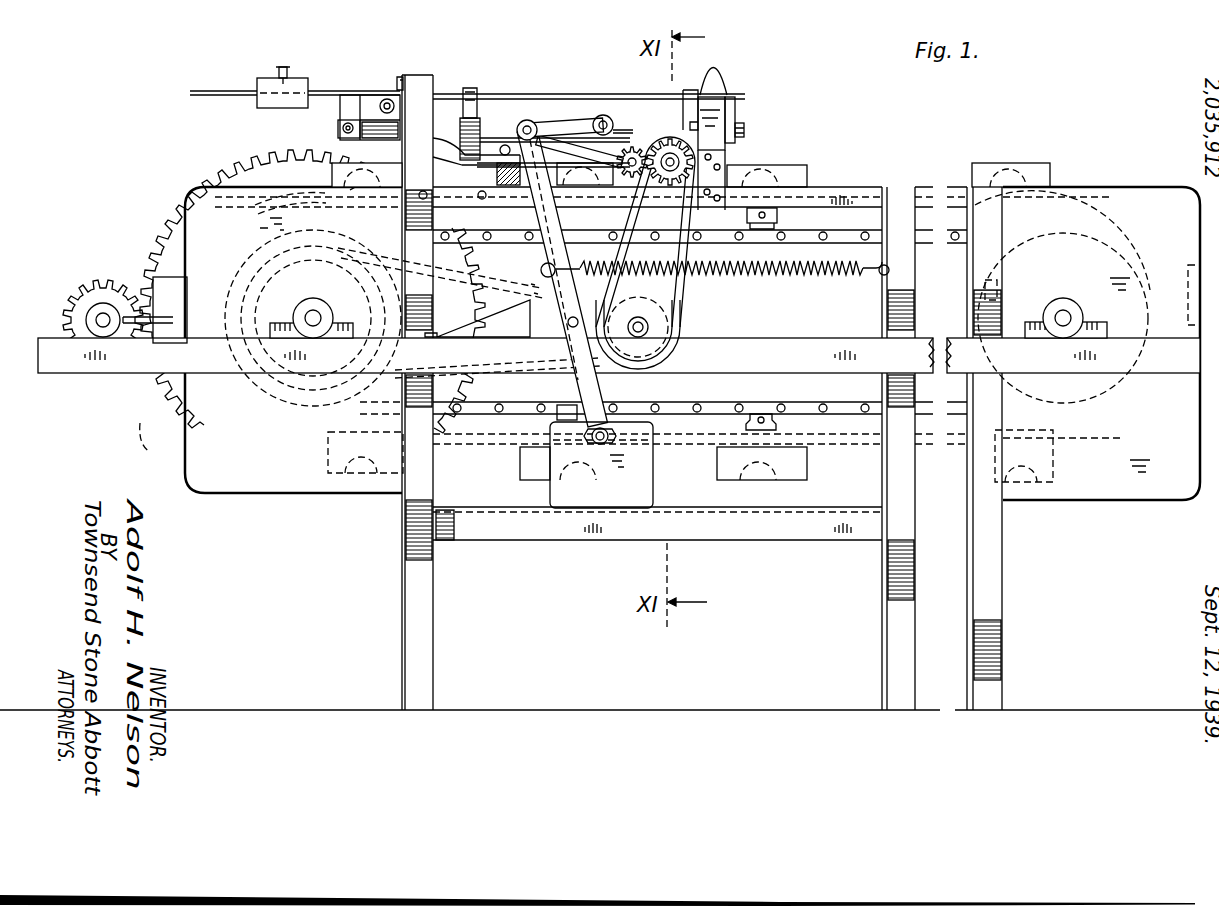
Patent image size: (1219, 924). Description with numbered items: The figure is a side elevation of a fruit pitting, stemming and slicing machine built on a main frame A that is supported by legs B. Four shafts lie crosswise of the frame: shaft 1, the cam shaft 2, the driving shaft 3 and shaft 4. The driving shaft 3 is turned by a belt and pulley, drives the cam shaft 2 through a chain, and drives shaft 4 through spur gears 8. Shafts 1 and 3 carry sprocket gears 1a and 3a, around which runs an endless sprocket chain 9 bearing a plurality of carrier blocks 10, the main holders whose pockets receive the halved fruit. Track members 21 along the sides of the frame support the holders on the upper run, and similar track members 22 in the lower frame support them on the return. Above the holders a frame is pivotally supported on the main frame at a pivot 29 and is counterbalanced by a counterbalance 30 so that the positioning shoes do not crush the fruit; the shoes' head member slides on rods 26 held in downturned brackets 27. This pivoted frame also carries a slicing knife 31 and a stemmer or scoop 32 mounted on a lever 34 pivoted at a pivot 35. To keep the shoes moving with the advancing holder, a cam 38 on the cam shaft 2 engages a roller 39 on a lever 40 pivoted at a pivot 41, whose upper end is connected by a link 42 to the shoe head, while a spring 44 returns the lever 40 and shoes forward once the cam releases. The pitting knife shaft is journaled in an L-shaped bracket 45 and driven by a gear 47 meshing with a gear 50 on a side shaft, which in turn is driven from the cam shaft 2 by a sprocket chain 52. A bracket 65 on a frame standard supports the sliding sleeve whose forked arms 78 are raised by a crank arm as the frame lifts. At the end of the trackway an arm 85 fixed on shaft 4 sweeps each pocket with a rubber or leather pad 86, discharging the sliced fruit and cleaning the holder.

The shaft 1 is at (1072, 318).
The sprocket gear 1a is at (993, 289).
The cam shaft 2 is at (648, 327).
The driving shaft 3 is at (318, 316).
The sprocket gear 3a is at (459, 330).
The shaft 4 is at (103, 332).
The spur gears 8 is at (240, 160).
The endless sprocket chain 9 is at (795, 405).
The carrier blocks 10 is at (355, 173).
The track members 21 is at (817, 187).
The track members 22 is at (466, 462).
The rods 26 is at (527, 120).
The downturned brackets 27 is at (744, 130).
The pivot 29 is at (387, 99).
The counterbalance 30 is at (288, 80).
The slicing knife 31 is at (497, 175).
The stemmer or scoop 32 is at (575, 145).
The lever 34 is at (440, 140).
The pivot 35 is at (338, 128).
The cam 38 is at (573, 362).
The roller 39 is at (565, 330).
The lever 40 is at (588, 392).
The pivot 41 is at (608, 442).
The link 42 is at (565, 123).
The spring 44 is at (825, 278).
The L-shaped bracket 45 is at (705, 110).
The gear 47 is at (637, 150).
The gear 50 is at (768, 166).
The sprocket chain 52 is at (690, 280).
The bracket 65 is at (477, 319).
The arms 78 is at (480, 250).
The arm 85 is at (127, 318).
The pad 86 is at (157, 446).
The main frame A is at (840, 190).
The legs B is at (420, 636).